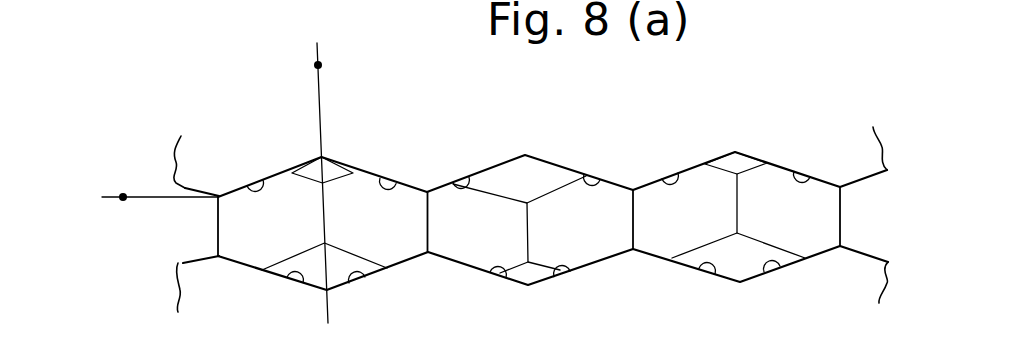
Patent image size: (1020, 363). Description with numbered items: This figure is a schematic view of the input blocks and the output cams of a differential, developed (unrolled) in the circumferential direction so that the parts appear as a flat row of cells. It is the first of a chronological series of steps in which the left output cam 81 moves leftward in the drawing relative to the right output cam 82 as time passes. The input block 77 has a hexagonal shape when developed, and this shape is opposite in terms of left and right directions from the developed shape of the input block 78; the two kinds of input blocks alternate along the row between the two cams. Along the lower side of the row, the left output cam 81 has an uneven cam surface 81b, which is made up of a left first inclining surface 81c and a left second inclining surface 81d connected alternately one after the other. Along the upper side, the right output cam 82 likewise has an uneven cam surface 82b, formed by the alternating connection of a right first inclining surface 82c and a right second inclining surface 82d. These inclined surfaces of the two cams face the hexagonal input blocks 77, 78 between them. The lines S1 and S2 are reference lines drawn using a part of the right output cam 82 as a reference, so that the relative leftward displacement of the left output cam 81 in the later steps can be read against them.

The input block 77 is at (511, 211).
The input block 78 is at (566, 215).
The left output cam 81 is at (202, 298).
The uneven cam surface 81b is at (179, 264).
The left first inclining surface 81c is at (286, 276).
The left second inclining surface 81d is at (366, 274).
The right output cam 82 is at (197, 153).
The uneven cam surface 82b is at (176, 184).
The right first inclining surface 82c is at (265, 183).
The right second inclining surface 82d is at (380, 178).
The reference line S1 is at (123, 197).
The reference line S2 is at (318, 65).